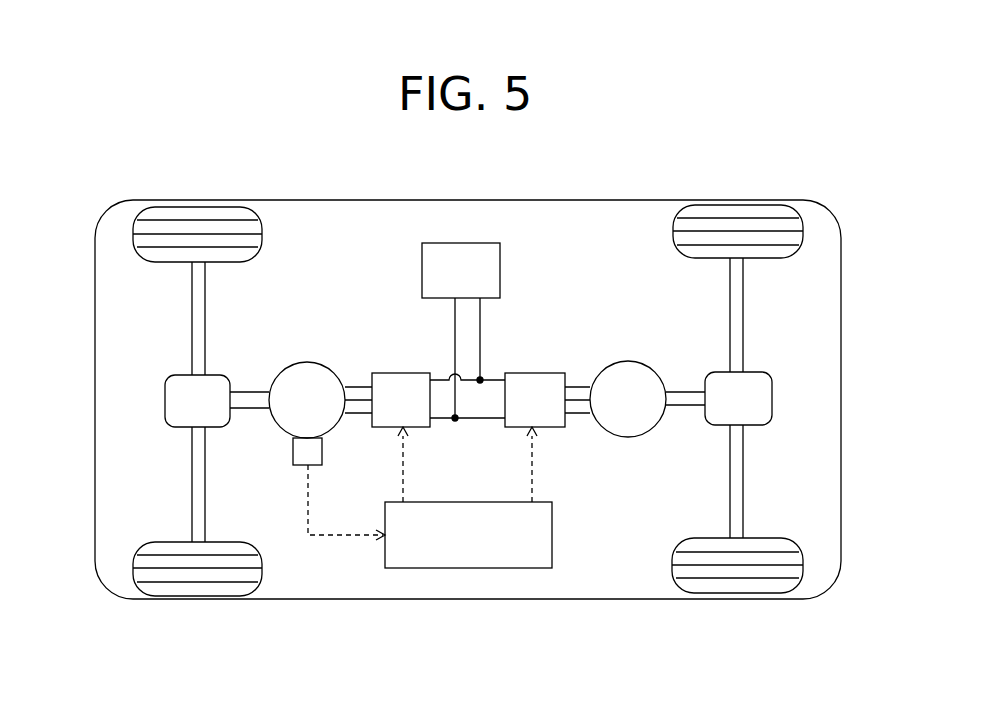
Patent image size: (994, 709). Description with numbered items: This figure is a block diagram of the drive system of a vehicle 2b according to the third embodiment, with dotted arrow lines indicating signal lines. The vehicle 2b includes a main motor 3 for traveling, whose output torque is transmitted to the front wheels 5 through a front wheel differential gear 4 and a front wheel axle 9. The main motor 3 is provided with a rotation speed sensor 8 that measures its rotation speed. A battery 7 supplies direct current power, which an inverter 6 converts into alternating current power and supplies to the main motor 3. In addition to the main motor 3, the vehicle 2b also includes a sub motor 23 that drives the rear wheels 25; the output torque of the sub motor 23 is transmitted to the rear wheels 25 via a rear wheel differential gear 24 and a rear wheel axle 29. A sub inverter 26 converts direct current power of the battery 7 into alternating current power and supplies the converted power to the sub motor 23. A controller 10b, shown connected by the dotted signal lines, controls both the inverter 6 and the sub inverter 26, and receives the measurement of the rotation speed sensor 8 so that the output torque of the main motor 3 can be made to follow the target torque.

The vehicle 2b is at (818, 207).
The main motor 3 is at (307, 362).
The front wheel differential gear 4 is at (163, 392).
The front wheels 5 is at (187, 205).
The inverter 6 is at (400, 373).
The battery 7 is at (460, 243).
The rotation speed sensor 8 is at (300, 465).
The front wheel axle 9 is at (190, 323).
The controller 10b is at (438, 568).
The sub motor 23 is at (630, 361).
The rear wheel differential gear 24 is at (772, 398).
The rear wheels 25 is at (733, 205).
The sub inverter 26 is at (540, 373).
The rear wheel axle 29 is at (745, 320).